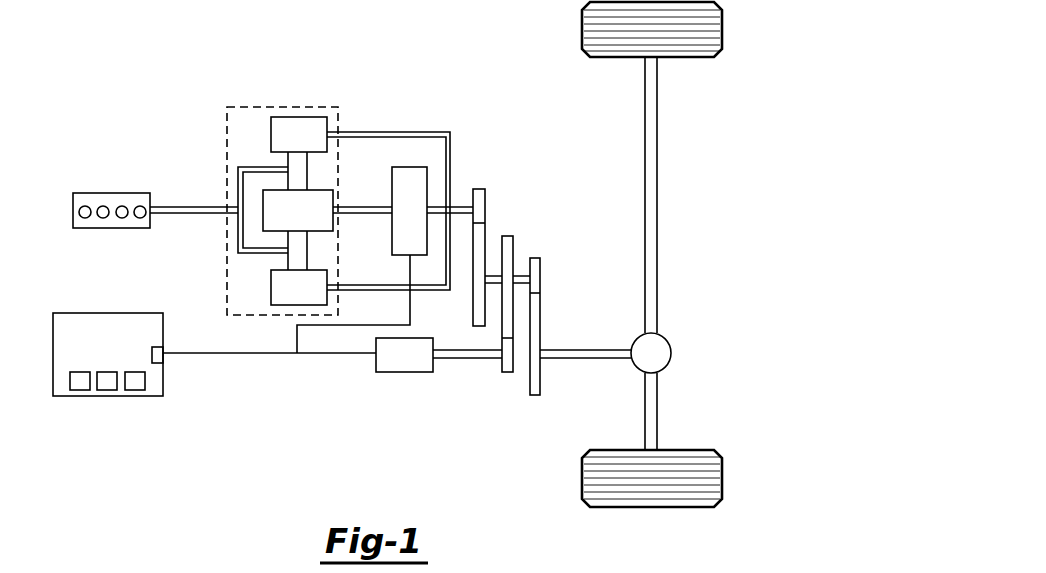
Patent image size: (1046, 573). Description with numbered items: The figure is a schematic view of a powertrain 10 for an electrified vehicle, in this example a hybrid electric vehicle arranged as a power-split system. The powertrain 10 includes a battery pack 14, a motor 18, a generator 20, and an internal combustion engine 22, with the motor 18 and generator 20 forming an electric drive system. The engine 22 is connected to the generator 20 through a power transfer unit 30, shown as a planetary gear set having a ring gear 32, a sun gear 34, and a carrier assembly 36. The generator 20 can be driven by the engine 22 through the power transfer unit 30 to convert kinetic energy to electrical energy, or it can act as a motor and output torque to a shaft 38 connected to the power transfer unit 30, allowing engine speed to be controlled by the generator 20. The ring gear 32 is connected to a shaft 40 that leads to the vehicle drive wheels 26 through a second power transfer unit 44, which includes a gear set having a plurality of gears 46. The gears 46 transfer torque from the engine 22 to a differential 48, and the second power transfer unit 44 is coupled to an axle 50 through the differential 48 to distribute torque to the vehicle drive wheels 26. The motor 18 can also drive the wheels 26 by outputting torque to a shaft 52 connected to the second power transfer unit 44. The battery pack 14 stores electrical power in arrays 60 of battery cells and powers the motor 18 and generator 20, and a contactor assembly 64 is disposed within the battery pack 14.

The powertrain 10 is at (96, 34).
The battery pack 14 is at (214, 355).
The motor 18 is at (405, 372).
The generator 20 is at (427, 178).
The internal combustion engine 22 is at (70, 193).
The vehicle drive wheels 26 is at (722, 27).
The power transfer unit 30 is at (340, 107).
The ring gear 32 is at (271, 130).
The sun gear 34 is at (320, 231).
The carrier assembly 36 is at (238, 192).
The shaft 38 is at (364, 207).
The shaft 40 is at (461, 215).
The second power transfer unit 44 is at (556, 203).
The gears 46 is at (485, 200).
The differential 48 is at (671, 355).
The axle 50 is at (657, 200).
The shaft 52 is at (470, 360).
The arrays 60 is at (80, 390).
The contactor assembly 64 is at (157, 365).